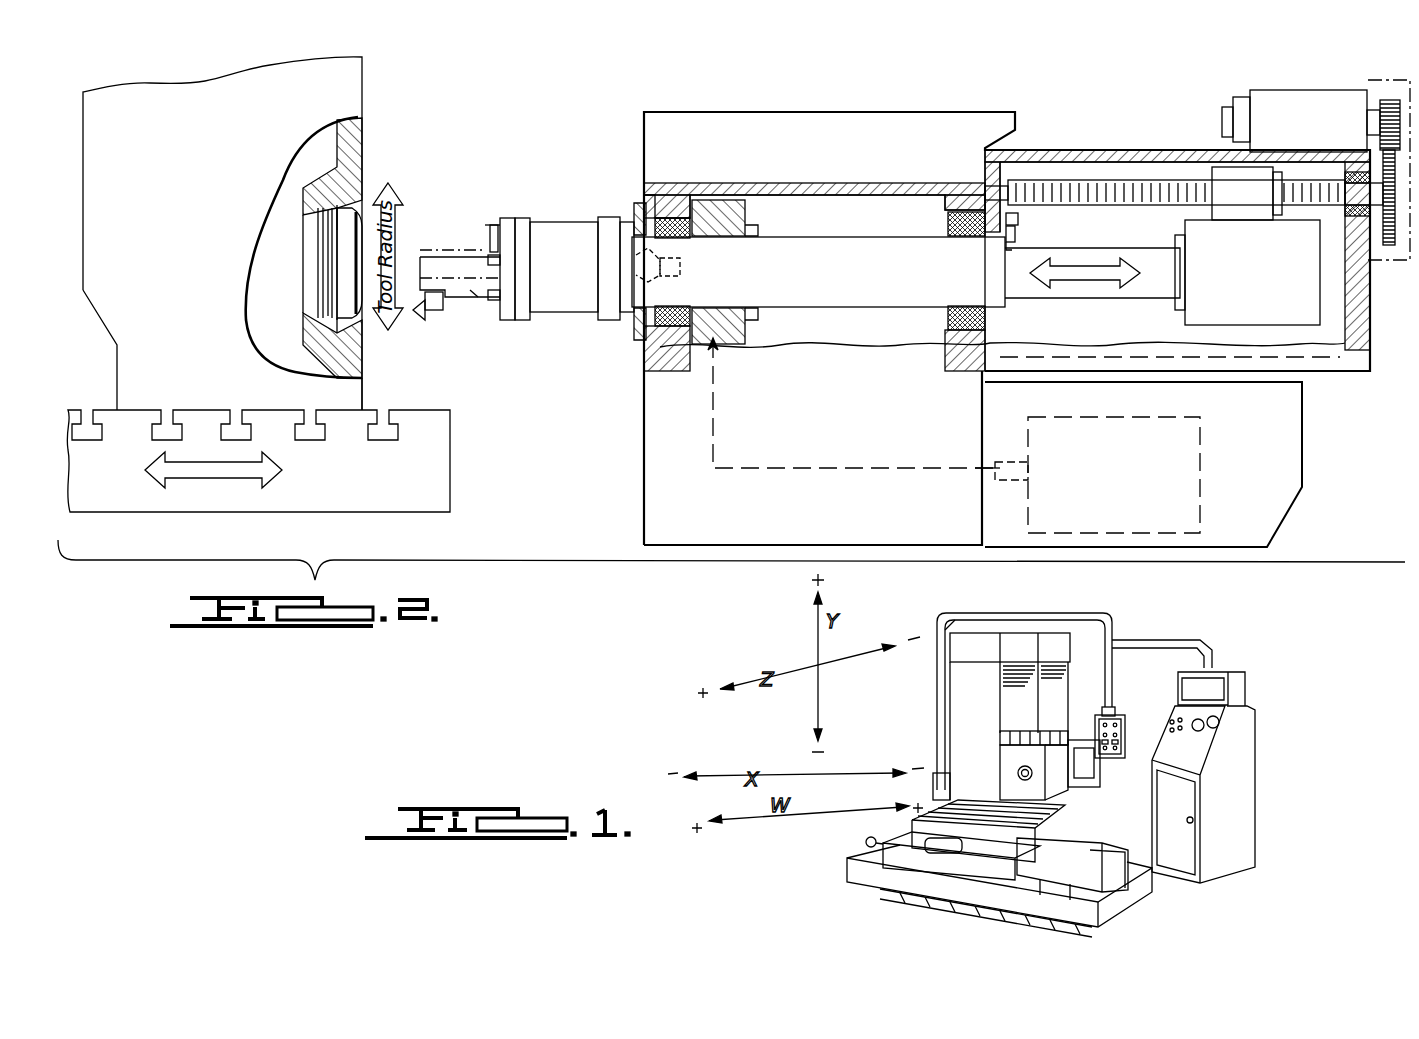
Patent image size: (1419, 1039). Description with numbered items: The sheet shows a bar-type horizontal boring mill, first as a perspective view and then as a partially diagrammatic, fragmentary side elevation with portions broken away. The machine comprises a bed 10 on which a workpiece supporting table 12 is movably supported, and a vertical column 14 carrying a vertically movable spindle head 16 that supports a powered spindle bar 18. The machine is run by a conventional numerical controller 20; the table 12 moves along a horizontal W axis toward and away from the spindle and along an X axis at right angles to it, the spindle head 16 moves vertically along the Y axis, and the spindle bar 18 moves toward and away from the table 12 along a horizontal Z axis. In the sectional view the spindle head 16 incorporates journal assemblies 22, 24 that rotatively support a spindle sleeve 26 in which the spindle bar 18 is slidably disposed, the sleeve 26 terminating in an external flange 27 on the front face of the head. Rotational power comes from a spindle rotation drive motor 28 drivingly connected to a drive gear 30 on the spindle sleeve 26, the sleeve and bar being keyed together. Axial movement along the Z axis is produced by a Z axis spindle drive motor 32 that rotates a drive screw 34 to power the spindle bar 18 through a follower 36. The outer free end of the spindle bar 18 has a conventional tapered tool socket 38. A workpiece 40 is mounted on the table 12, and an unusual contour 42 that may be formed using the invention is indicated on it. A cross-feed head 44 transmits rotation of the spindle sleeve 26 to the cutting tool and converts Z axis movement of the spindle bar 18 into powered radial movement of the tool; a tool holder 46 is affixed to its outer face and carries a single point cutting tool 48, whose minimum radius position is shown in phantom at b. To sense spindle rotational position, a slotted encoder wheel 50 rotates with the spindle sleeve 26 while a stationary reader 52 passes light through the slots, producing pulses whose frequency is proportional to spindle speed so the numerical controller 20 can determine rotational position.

In FIG. 1, the bed 10 is at (872, 872).
In FIG. 2, the workpiece supporting table 12 is at (450, 466).
In FIG. 1, the workpiece supporting table 12 is at (992, 836).
In FIG. 1, the vertical column 14 is at (972, 646).
In FIG. 2, the spindle head 16 is at (862, 114).
In FIG. 1, the spindle head 16 is at (1010, 749).
In FIG. 2, the spindle bar 18 is at (1162, 290).
In FIG. 1, the spindle bar 18 is at (1017, 772).
In FIG. 1, the numerical controller 20 is at (1247, 756).
In FIG. 2, the journal assembly 22 is at (672, 218).
In FIG. 1, the journal assembly 22 is at (1123, 718).
In FIG. 2, the journal assembly 24 is at (962, 212).
In FIG. 2, the spindle sleeve 26 is at (812, 238).
In FIG. 2, the external flange 27 is at (628, 320).
In FIG. 2, the spindle rotation drive motor 28 is at (1168, 472).
In FIG. 2, the drive gear 30 is at (735, 326).
In FIG. 2, the Z axis spindle drive motor 32 is at (1316, 170).
In FIG. 2, the drive screw 34 is at (1112, 182).
In FIG. 2, the follower 36 is at (1240, 222).
In FIG. 2, the tapered tool socket 38 is at (681, 266).
In FIG. 2, the workpiece 40 is at (362, 68).
In FIG. 2, the unusual contour 42 is at (350, 262).
In FIG. 2, the cross-feed head 44 is at (565, 312).
In FIG. 2, the tool holder 46 is at (470, 262).
In FIG. 2, the single point cutting tool 48 is at (385, 381).
In FIG. 2, the slotted encoder wheel 50 is at (1018, 236).
In FIG. 2, the reader 52 is at (1020, 220).
In FIG. 2, the minimum radius position b is at (430, 314).